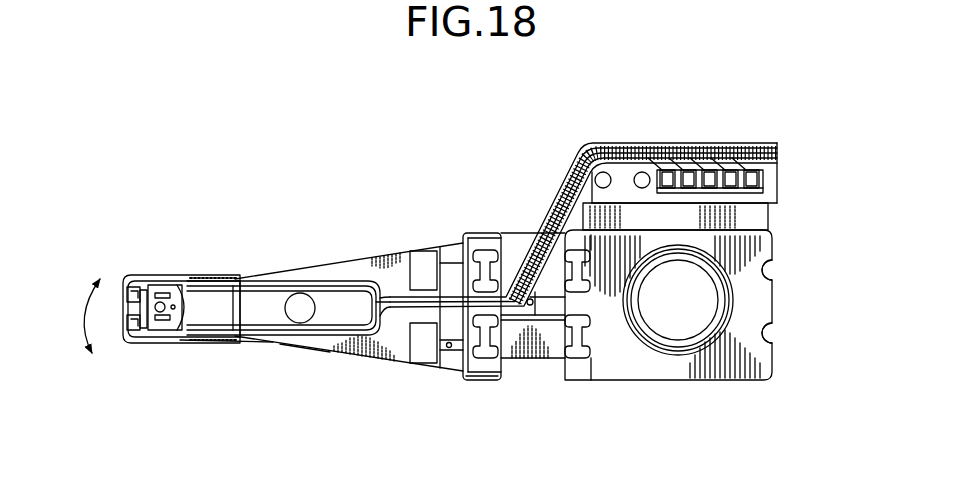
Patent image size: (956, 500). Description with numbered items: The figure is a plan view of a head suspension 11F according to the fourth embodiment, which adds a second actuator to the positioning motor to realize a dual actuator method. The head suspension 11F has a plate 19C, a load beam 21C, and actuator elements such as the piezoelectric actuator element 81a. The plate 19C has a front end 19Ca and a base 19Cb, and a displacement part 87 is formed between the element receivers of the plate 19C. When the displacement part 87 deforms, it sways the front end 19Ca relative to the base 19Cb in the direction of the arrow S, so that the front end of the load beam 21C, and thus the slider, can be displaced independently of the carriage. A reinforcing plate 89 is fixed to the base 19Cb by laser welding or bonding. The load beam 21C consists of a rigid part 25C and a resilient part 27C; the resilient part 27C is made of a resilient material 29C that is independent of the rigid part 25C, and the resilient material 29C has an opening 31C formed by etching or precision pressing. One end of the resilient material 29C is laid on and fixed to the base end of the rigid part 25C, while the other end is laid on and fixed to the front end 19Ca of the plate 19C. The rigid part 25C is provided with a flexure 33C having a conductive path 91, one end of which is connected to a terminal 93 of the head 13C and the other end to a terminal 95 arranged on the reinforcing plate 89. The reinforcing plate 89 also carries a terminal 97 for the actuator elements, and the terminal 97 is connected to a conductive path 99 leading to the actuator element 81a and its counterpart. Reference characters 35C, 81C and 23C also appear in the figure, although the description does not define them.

The head suspension 11F is at (493, 152).
The conductive path 99 is at (603, 172).
The terminal 97 is at (664, 172).
The terminal 95 is at (710, 172).
The reinforcing plate 89 is at (758, 215).
The base 19Cb is at (753, 310).
The head 13C is at (128, 278).
The inner frame 35C is at (170, 290).
The flexure 33C is at (253, 300).
The rigid part 25C is at (322, 268).
The load beam 21C is at (358, 257).
The resilient material 29C is at (423, 250).
The resilient part 27C is at (452, 230).
The opening 31C is at (450, 348).
The bracket 81C is at (507, 258).
The arrow S is at (80, 316).
The terminal 93 is at (134, 307).
The conductive path 91 is at (320, 344).
The front end 19Ca is at (480, 381).
The actuator element 81a is at (510, 360).
The displacement part 87 is at (550, 322).
The plate 19C is at (617, 362).
The mounting hole 23C is at (665, 357).